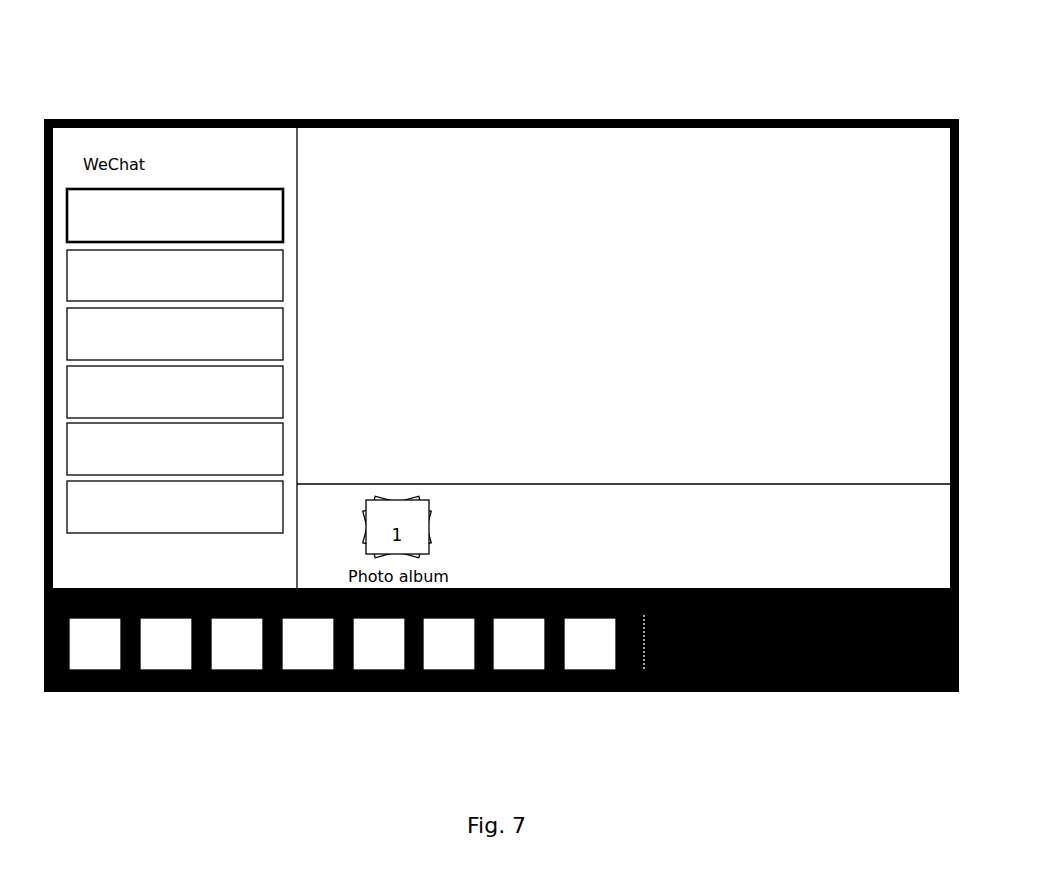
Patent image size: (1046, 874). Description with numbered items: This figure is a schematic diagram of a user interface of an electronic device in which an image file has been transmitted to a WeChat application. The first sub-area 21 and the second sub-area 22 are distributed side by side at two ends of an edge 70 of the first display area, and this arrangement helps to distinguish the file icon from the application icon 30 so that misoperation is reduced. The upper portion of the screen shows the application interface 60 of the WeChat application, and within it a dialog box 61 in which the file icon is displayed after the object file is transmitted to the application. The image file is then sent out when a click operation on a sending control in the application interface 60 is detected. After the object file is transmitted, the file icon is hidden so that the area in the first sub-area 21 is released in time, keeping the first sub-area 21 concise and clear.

The edge 70 is at (879, 692).
The application interface 60 is at (638, 163).
The dialog box 61 is at (733, 510).
The first sub-area 21 is at (747, 692).
The second sub-area 22 is at (317, 693).
The application icon 30 is at (593, 650).